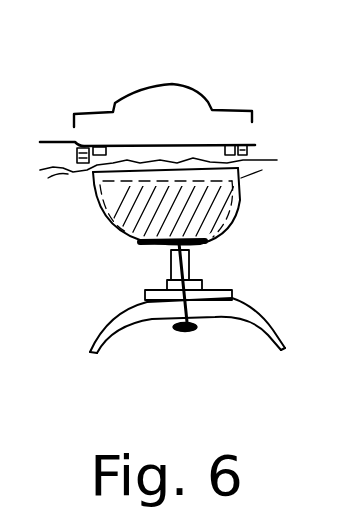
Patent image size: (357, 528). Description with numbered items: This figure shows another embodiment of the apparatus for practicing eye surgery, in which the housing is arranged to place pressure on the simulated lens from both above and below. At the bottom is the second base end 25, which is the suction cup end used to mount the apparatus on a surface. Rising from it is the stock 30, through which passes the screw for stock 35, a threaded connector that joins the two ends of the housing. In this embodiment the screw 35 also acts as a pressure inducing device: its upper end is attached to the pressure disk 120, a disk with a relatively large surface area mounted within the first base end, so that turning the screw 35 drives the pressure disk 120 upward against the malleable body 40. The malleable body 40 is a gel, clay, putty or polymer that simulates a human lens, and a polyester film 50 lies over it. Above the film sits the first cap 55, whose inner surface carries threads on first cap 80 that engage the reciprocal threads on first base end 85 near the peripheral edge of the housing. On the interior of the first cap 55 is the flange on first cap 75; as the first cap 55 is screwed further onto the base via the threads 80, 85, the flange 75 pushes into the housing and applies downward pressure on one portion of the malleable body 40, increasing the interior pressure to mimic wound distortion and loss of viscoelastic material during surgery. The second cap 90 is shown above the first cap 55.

The second cap 90 is at (205, 100).
The flange on first cap 75 is at (228, 143).
The threads on first cap 80 is at (248, 143).
The first cap 55 is at (73, 145).
The threads on first base end 85 is at (277, 160).
The polyester film 50 is at (62, 170).
The malleable body 40 is at (222, 212).
The pressure disk 120 is at (140, 244).
The screw for stock 35 is at (205, 250).
The stock 30 is at (198, 265).
The second base end 25 is at (272, 322).